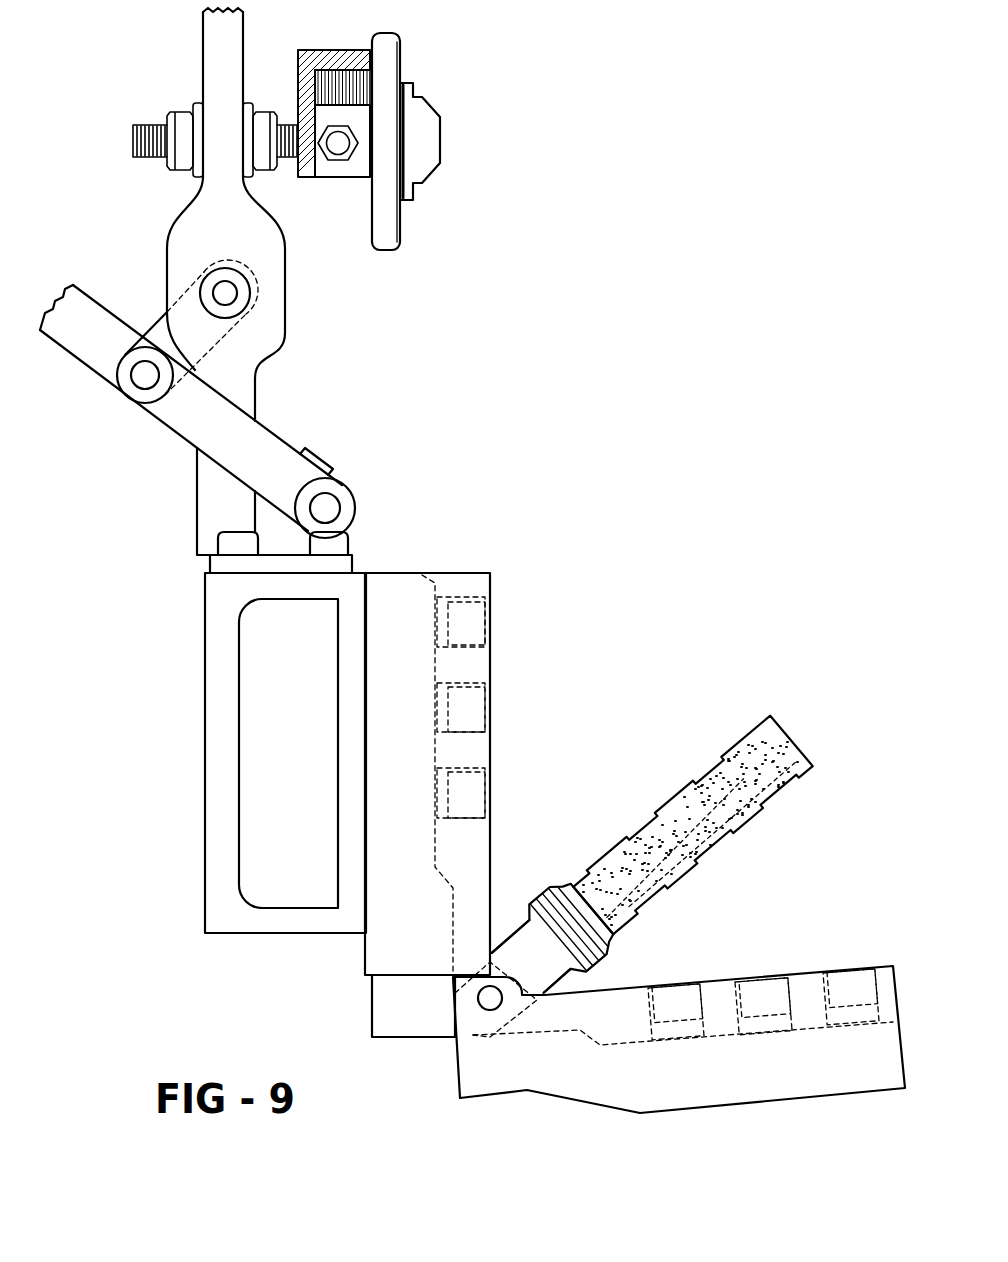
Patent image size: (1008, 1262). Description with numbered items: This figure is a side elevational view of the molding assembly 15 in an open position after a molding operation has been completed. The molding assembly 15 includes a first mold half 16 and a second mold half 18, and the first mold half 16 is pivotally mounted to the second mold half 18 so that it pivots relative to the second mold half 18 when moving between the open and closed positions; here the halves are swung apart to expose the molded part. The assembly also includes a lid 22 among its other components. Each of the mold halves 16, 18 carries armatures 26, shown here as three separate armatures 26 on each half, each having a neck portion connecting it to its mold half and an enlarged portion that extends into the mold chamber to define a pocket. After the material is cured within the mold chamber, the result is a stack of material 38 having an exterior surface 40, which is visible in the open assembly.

The molding assembly 15 is at (522, 365).
The first mold half 16 is at (679, 1034).
The second mold half 18 is at (390, 580).
The lid 22 is at (387, 50).
The armature 26 is at (772, 990).
The stack of material 38 is at (659, 834).
The exterior surface 40 is at (773, 780).